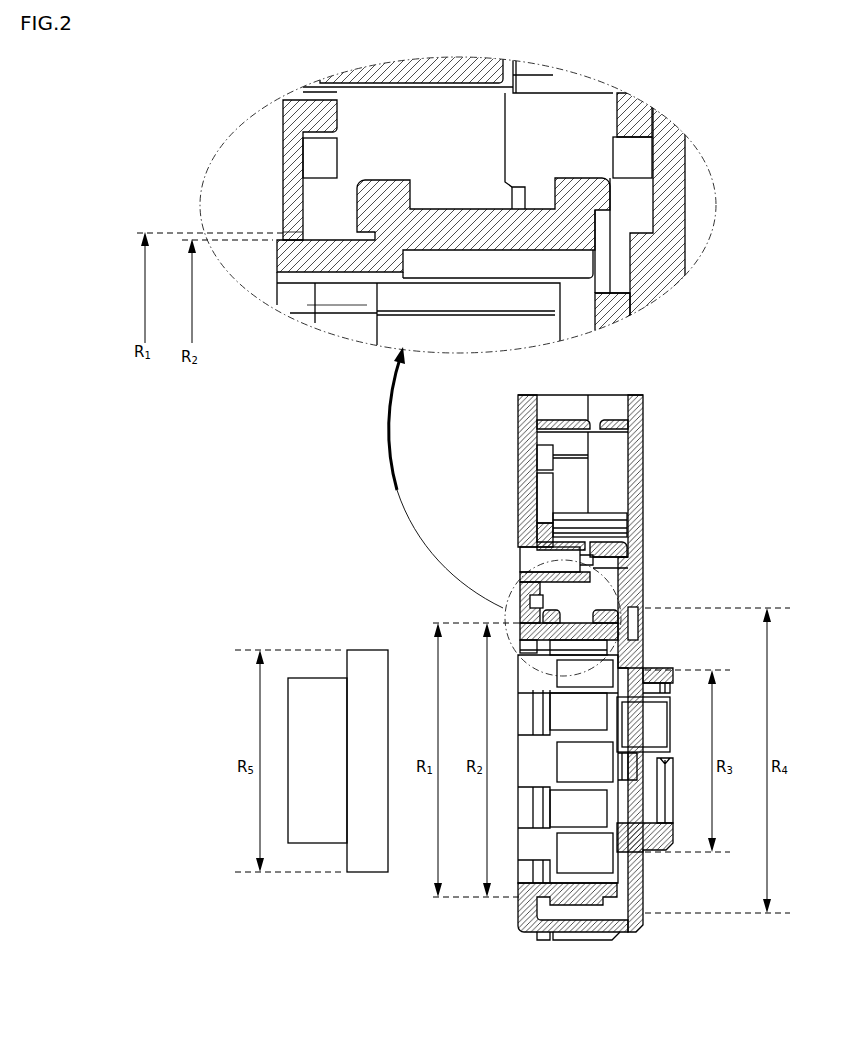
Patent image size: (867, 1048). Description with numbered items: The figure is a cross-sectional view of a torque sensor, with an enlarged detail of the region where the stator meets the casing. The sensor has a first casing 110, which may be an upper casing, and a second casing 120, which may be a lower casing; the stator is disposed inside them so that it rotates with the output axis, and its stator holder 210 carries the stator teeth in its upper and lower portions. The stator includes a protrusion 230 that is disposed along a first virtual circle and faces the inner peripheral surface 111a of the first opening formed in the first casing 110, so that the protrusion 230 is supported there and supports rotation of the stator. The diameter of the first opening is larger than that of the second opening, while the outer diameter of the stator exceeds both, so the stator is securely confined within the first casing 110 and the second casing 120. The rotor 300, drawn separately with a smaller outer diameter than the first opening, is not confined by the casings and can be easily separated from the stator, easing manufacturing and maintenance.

The first casing 110 is at (283, 152).
The inner peripheral surface of the first opening 111a is at (283, 212).
The second casing 120 is at (645, 440).
The stator holder 210 is at (612, 928).
The protrusion 230 is at (328, 267).
The rotor 300 is at (318, 642).